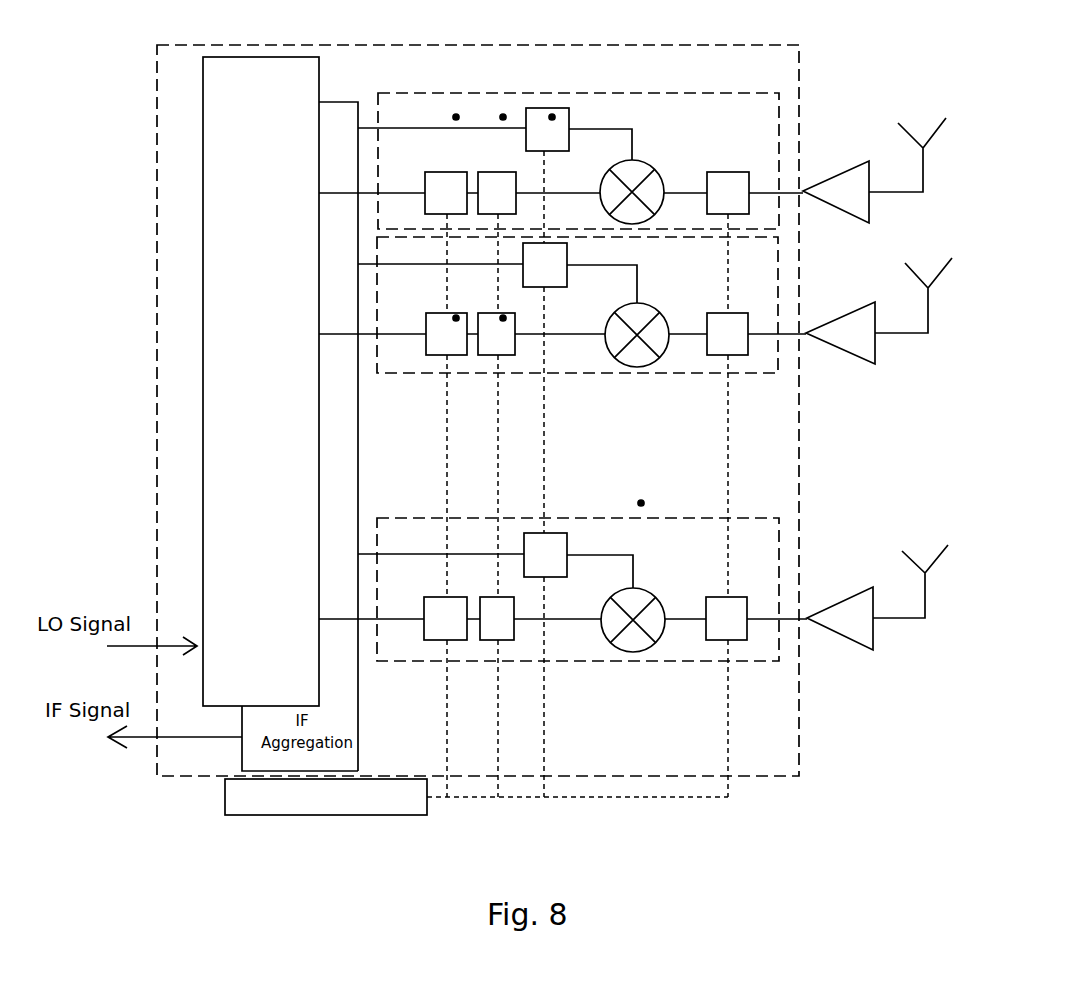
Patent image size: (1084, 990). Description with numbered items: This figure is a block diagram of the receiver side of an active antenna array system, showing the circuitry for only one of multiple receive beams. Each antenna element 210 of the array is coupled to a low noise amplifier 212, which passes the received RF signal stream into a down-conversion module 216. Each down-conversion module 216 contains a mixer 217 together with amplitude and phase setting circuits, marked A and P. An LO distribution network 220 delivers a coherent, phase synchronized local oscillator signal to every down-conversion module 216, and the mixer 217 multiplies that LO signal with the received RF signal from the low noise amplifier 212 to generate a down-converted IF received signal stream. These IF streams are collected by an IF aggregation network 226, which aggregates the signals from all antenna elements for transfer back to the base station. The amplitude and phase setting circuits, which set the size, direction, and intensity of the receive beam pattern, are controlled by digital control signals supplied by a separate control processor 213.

The antenna element 210 is at (921, 158).
The low noise amplifier 212 is at (863, 213).
The control processor 213 is at (225, 797).
The down-conversion module 216 is at (753, 160).
The mixer 217 is at (608, 172).
The LO distribution network 220 is at (237, 105).
The IF aggregation network 226 is at (358, 102).